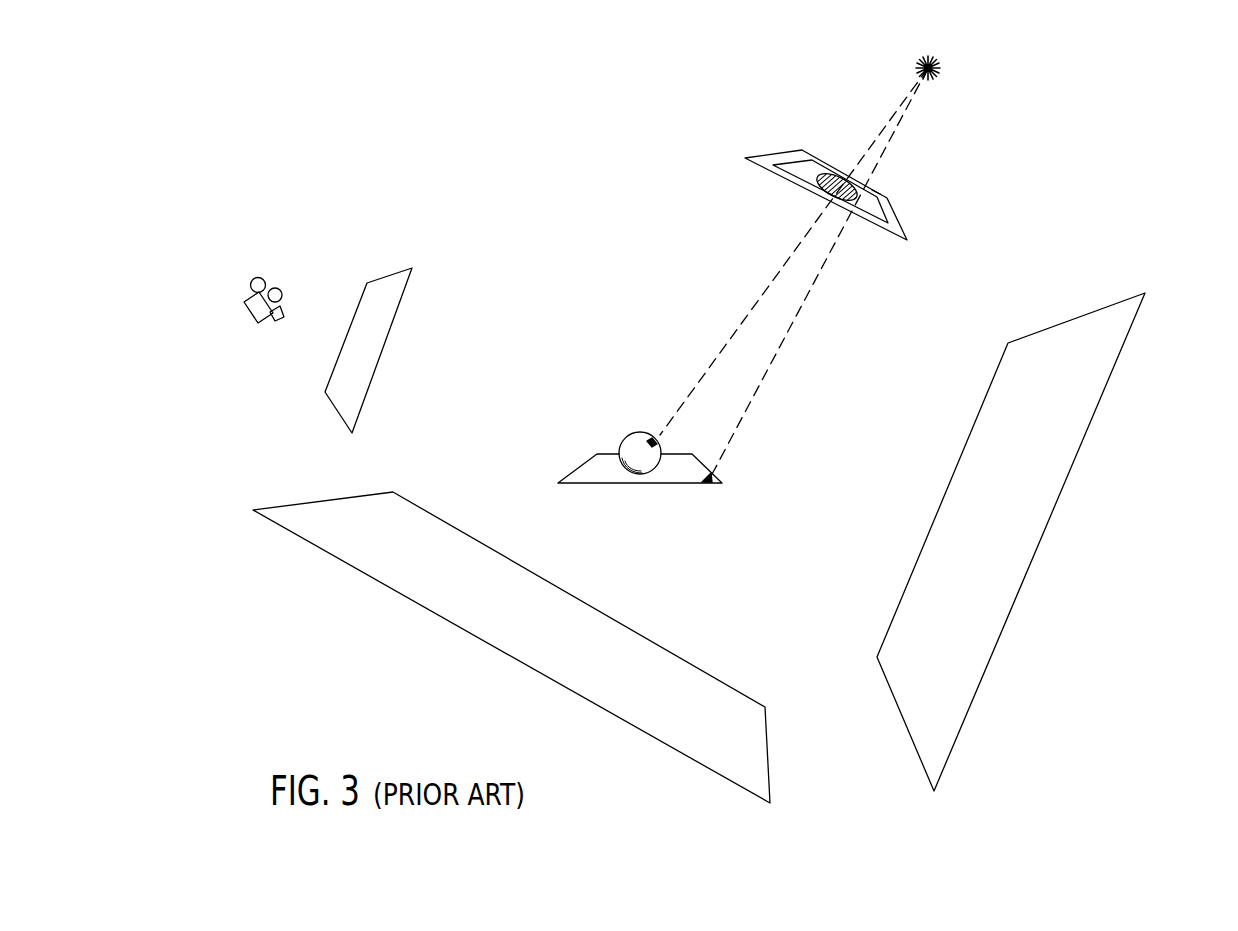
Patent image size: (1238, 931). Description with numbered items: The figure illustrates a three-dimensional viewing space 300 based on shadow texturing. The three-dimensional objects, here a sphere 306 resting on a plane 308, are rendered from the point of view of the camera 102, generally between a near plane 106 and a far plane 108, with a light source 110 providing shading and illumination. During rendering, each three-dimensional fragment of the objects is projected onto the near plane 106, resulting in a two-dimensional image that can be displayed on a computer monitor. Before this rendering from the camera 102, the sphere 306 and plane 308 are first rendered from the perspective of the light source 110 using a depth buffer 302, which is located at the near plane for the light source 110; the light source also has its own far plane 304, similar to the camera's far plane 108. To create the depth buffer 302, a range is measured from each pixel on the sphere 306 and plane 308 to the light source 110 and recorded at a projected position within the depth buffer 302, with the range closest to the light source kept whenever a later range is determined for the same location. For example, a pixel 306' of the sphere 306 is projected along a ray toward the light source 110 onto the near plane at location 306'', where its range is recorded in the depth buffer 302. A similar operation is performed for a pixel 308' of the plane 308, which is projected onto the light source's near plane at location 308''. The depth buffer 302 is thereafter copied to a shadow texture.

The 3D viewing space 300 is at (1123, 76).
The camera 102 is at (246, 293).
The near plane 106 is at (368, 282).
The far plane 108 is at (1073, 319).
The light source 110 is at (923, 70).
The depth buffer 302 is at (762, 153).
The far plane of the light source 304 is at (347, 563).
The sphere 306 is at (616, 435).
The pixel of the sphere 306' is at (637, 417).
The projected location of sphere pixel 306'' is at (825, 157).
The plane 308 is at (614, 465).
The pixel of the plane 308' is at (744, 465).
The projected location of plane pixel 308'' is at (916, 187).